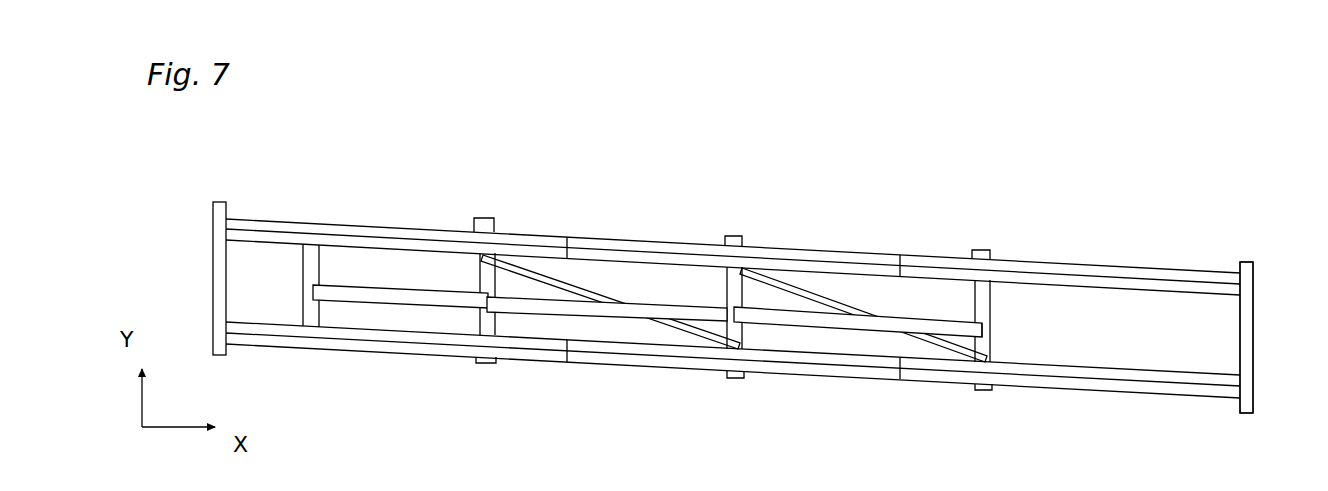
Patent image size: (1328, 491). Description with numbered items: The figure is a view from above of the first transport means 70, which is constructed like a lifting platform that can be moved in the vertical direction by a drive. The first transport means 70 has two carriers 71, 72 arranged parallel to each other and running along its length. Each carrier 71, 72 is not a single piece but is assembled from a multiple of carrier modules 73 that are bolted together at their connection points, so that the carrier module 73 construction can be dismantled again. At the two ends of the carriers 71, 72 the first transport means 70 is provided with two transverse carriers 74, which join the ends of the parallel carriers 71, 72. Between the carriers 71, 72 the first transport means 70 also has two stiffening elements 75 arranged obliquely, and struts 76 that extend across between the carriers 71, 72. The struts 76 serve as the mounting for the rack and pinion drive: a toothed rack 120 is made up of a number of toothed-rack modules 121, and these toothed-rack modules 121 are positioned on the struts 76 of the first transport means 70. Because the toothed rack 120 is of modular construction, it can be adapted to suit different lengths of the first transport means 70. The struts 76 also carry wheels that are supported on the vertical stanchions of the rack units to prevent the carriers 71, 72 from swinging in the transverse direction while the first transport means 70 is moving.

The first transport means 70 is at (1210, 166).
The carrier 71 is at (1184, 415).
The carrier 72 is at (1199, 261).
The carrier module 73 is at (276, 223).
The transverse carrier 74 is at (1253, 325).
The stiffening element 75 is at (535, 272).
The strut 76 is at (480, 277).
The toothed rack 120 is at (934, 314).
The toothed-rack module 121 is at (352, 297).